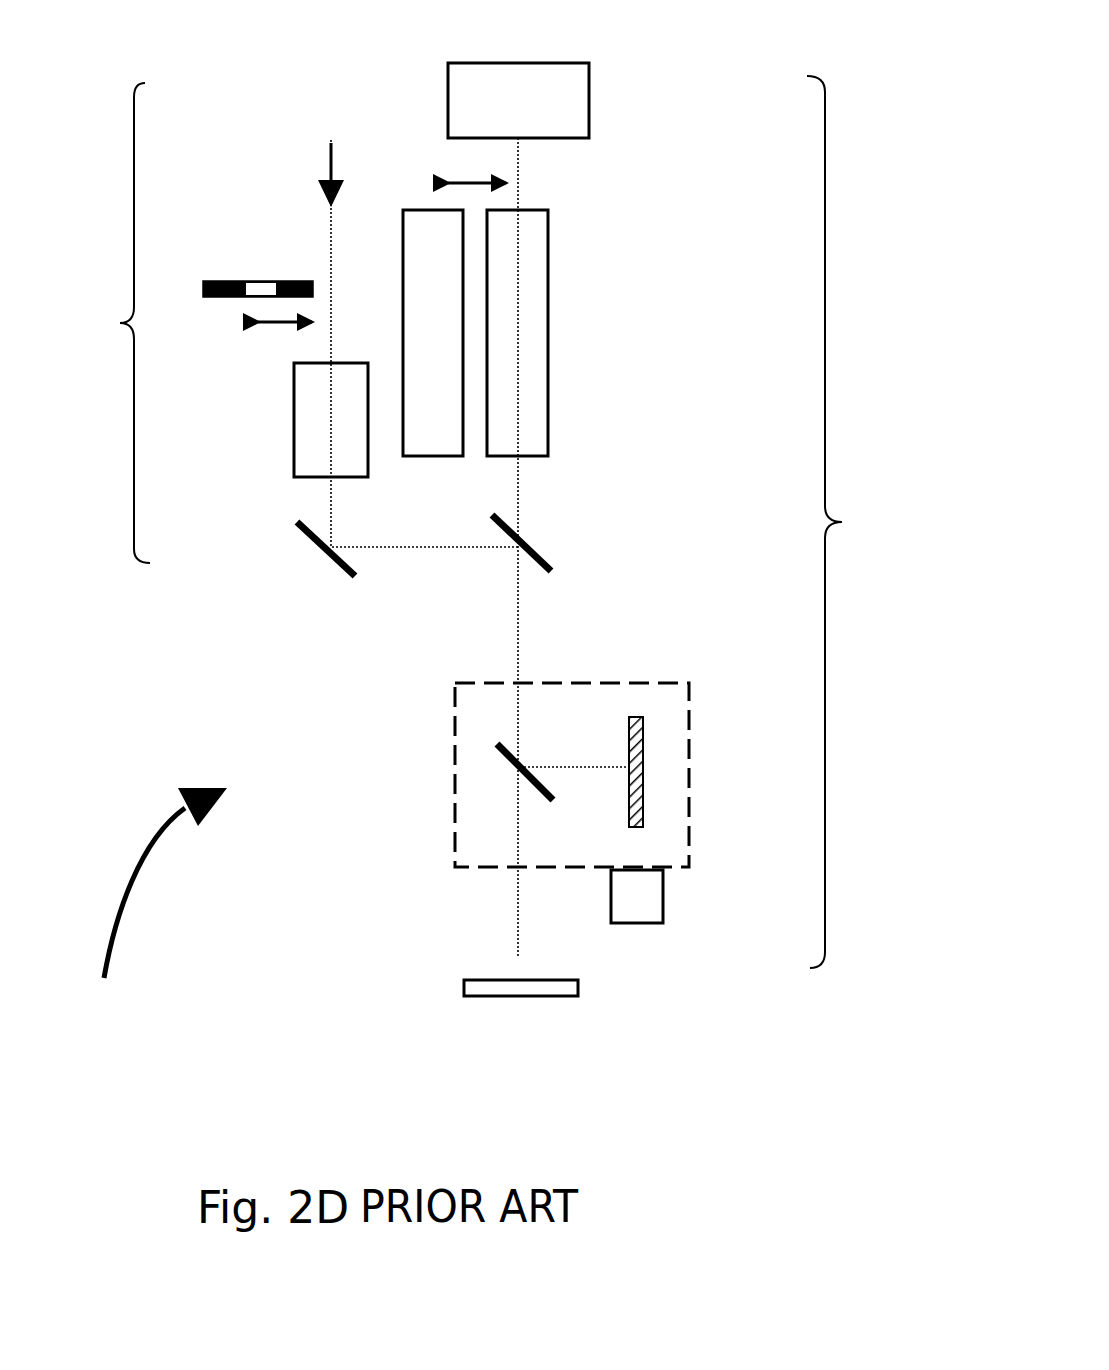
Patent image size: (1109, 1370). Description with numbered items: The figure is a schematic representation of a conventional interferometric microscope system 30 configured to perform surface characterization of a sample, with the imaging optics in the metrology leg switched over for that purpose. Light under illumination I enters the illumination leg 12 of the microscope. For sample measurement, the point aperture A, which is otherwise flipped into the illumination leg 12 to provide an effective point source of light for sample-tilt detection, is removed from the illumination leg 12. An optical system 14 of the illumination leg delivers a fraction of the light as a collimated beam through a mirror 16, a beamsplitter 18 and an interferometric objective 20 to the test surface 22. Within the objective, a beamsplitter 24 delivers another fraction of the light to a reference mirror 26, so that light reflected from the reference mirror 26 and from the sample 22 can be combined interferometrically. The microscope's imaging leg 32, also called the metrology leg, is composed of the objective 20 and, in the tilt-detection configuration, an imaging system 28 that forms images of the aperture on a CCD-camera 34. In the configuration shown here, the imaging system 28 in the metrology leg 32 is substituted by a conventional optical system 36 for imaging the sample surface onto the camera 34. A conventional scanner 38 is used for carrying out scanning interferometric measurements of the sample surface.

The illumination leg 12 is at (103, 323).
The optical system 14 is at (297, 393).
The mirror 16 is at (290, 528).
The beamsplitter 18 is at (550, 555).
The interferometric objective 20 is at (692, 825).
The test surface 22 is at (448, 980).
The beamsplitter 24 is at (490, 750).
The reference mirror 26 is at (651, 762).
The imaging system 28 is at (437, 205).
The microscope system 30 is at (131, 889).
The imaging leg 32 is at (858, 522).
The CCD-camera 34 is at (573, 80).
The conventional optical system 36 is at (550, 416).
The conventional scanner 38 is at (663, 918).
The illumination I is at (312, 153).
The point aperture A is at (193, 287).